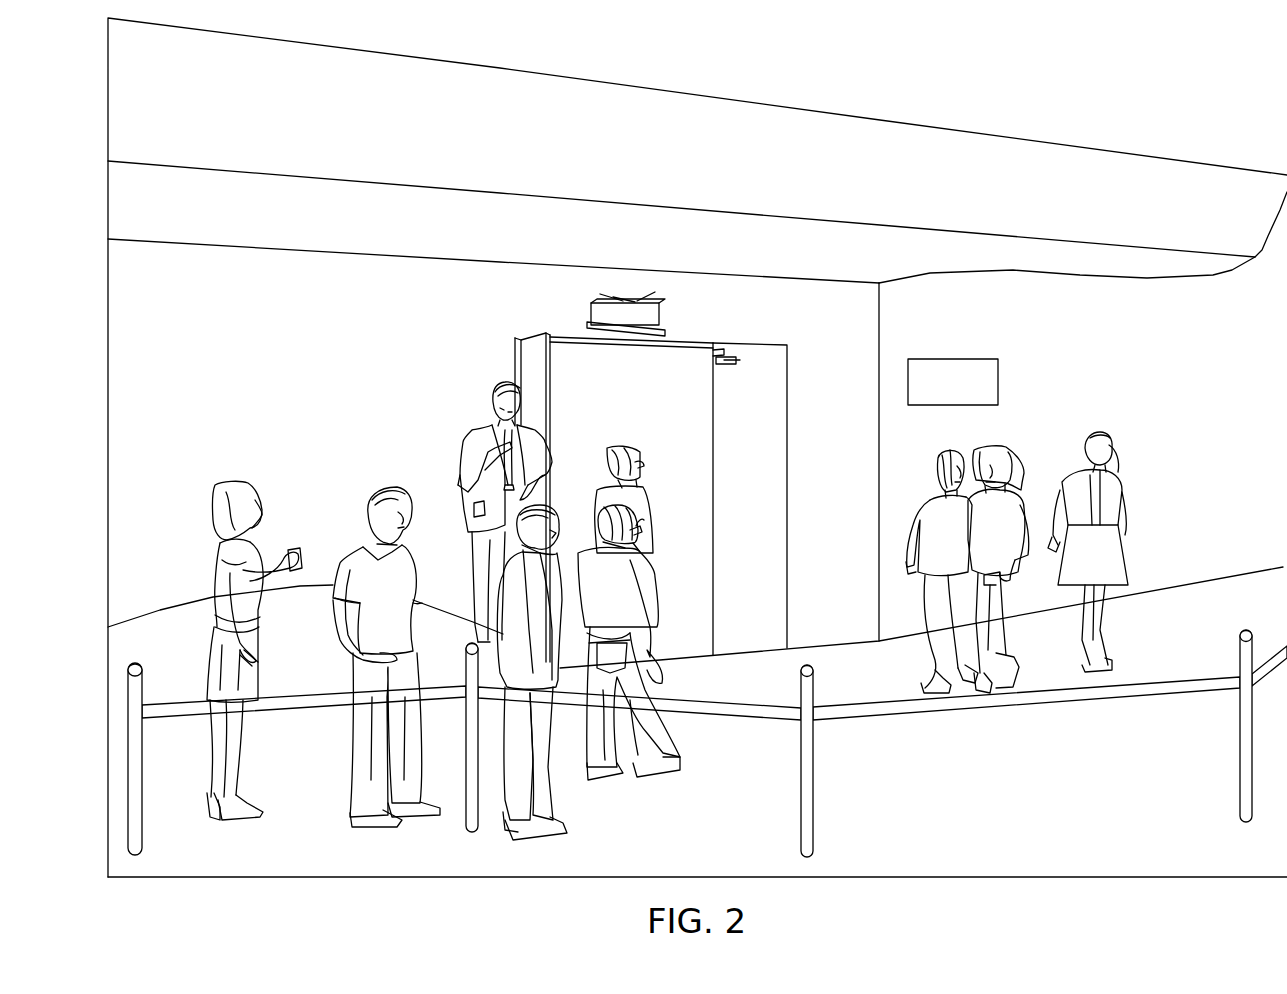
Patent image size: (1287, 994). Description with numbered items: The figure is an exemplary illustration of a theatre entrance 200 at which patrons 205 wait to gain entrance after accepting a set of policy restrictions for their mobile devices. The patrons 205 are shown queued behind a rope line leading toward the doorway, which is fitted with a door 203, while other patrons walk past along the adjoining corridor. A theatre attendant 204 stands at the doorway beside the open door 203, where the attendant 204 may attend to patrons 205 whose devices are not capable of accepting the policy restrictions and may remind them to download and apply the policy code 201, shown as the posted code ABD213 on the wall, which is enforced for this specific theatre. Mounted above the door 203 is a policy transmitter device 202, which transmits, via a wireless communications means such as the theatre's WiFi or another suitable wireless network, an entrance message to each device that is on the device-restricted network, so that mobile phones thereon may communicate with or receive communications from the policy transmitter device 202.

The theatre entrance 200 is at (1083, 92).
The policy code 201 is at (1001, 381).
The policy transmitter device 202 is at (592, 316).
The door 203 is at (714, 409).
The theatre attendant 204 is at (472, 431).
The patrons 205 is at (227, 484).